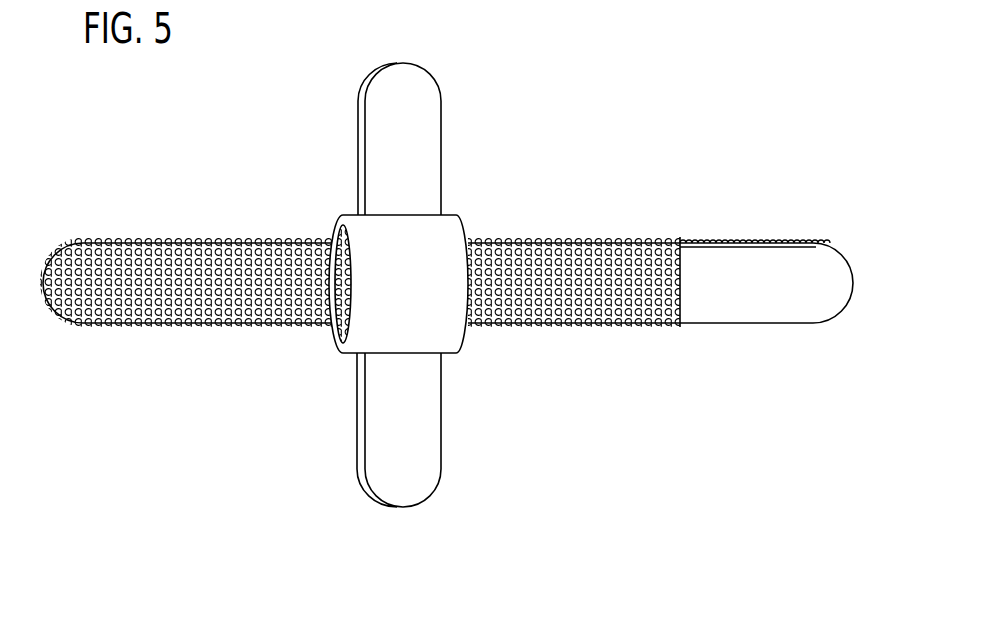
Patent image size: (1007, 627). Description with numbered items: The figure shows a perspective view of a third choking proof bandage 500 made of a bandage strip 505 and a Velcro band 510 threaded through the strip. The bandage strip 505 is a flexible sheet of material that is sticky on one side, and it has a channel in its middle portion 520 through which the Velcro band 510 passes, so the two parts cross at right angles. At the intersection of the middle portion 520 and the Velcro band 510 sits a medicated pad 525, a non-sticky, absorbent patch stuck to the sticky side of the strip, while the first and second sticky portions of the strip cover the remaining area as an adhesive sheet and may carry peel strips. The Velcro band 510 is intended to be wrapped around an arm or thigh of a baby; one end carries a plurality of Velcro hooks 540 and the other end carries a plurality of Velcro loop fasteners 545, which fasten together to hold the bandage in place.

The third choking proof bandage 500 is at (567, 114).
The bandage strip 505 is at (405, 460).
The Velcro band 510 is at (740, 312).
The middle portion 520 is at (442, 316).
The medicated pad 525 is at (318, 207).
The Velcro hooks 540 is at (743, 237).
The Velcro loop fasteners 545 is at (193, 322).